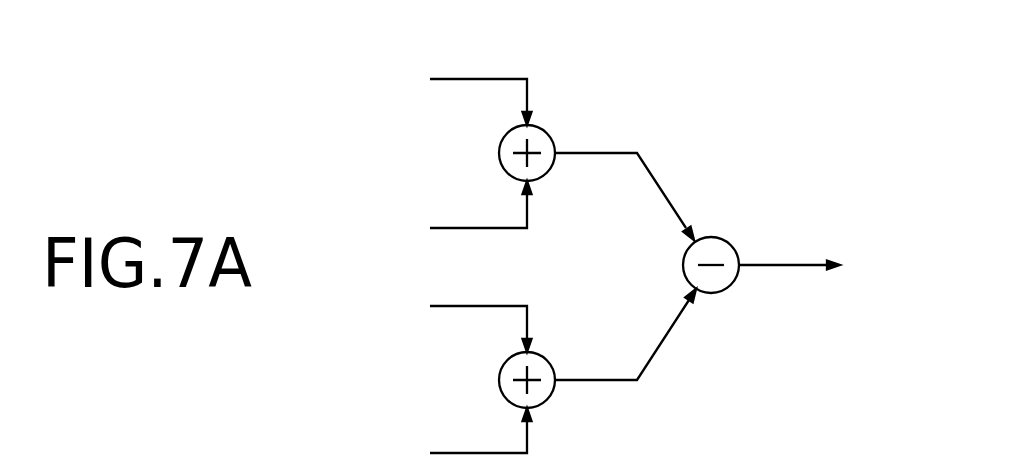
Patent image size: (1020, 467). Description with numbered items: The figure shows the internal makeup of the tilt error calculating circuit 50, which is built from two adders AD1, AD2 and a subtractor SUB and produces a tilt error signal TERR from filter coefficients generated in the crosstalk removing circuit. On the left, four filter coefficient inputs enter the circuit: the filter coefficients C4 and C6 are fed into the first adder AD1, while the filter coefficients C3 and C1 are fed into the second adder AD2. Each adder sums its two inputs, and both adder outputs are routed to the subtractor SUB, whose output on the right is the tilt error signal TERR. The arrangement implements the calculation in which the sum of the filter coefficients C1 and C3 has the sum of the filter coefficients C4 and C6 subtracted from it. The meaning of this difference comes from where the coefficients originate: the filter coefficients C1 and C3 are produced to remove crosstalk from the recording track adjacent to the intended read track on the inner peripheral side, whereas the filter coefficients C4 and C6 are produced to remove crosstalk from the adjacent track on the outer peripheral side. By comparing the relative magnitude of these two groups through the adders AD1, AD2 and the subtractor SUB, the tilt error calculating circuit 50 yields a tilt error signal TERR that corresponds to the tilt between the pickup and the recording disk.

The tilt error calculating circuit 50 is at (746, 52).
The adder AD1 is at (552, 137).
The adder AD2 is at (552, 360).
The subtractor SUB is at (732, 238).
The filter coefficient C4 is at (457, 94).
The filter coefficient C6 is at (457, 213).
The filter coefficient C3 is at (457, 321).
The filter coefficient C1 is at (457, 437).
The tilt error signal TERR is at (825, 268).